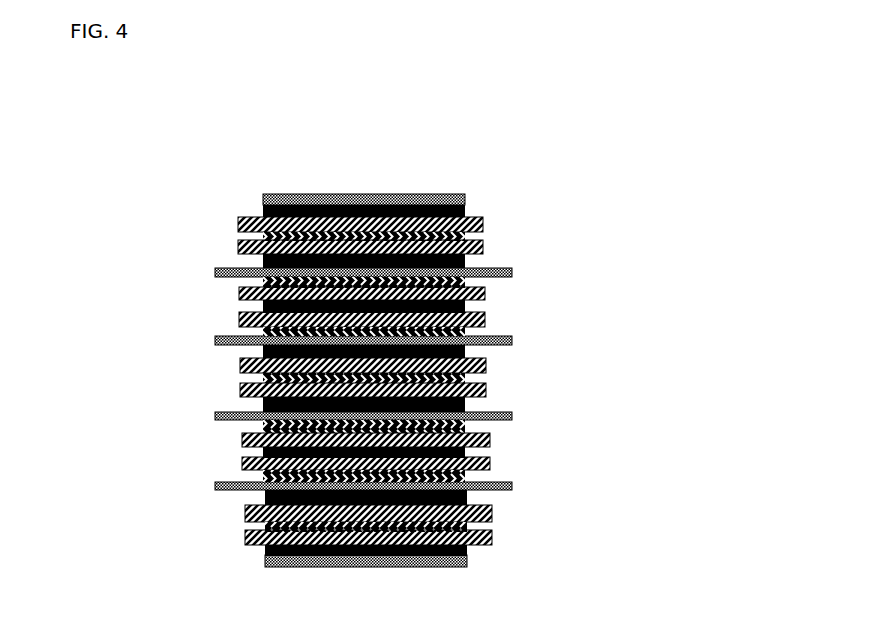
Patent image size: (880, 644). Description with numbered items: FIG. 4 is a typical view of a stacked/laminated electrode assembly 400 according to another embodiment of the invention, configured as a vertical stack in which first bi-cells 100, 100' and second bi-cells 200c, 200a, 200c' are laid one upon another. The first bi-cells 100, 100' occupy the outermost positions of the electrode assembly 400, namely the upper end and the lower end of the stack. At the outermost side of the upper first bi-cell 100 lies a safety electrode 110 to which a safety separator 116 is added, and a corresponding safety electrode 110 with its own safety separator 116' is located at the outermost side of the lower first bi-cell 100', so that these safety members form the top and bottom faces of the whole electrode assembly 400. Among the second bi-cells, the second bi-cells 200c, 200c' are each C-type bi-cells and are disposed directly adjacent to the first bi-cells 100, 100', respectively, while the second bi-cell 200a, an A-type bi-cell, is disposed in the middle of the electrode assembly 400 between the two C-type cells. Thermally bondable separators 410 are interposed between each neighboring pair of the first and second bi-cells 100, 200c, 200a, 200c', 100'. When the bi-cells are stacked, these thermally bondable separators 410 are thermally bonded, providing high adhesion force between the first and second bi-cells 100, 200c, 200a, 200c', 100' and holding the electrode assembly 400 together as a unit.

The electrode assembly 400 is at (110, 162).
The safety separator 116 is at (364, 166).
The safety separator 116' is at (366, 597).
The safety electrode 110 is at (260, 204).
The first bi-cell 100 is at (434, 235).
The first bi-cell 100' is at (450, 517).
The second bi-cell 200c is at (443, 306).
The second bi-cell 200a is at (509, 381).
The second bi-cell 200c' is at (454, 451).
The thermally bondable separator 410 is at (214, 486).